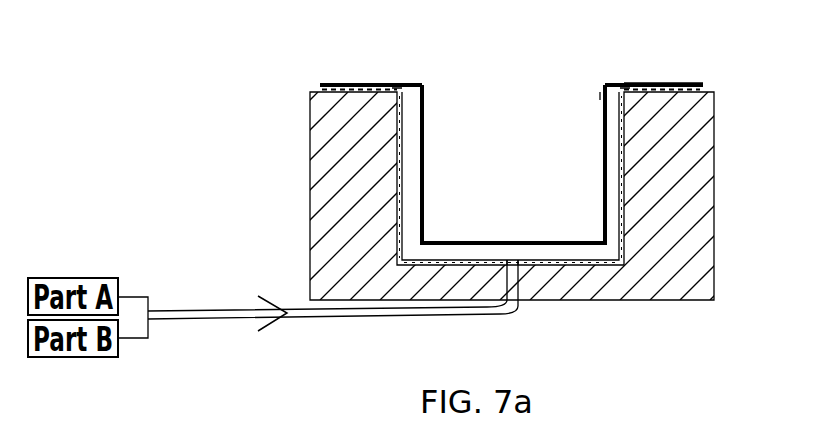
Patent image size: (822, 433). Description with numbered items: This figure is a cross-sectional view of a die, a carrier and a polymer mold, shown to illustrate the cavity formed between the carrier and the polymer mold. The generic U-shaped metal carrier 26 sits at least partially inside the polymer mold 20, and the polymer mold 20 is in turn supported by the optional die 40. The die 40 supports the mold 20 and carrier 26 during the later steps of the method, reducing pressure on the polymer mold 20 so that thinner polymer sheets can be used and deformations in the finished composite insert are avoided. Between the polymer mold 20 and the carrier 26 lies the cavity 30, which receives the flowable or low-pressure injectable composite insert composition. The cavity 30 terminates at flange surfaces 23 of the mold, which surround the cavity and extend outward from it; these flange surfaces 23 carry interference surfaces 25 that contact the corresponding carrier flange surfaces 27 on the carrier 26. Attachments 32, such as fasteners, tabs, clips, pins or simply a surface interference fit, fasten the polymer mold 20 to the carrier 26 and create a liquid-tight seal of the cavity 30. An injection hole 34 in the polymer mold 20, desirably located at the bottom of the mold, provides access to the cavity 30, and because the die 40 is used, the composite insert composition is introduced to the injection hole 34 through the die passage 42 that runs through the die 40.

The polymer mold 20 is at (623, 146).
The flange surfaces 23 is at (710, 88).
The interference surfaces 25 is at (393, 88).
The carrier 26 is at (602, 95).
The carrier flange surfaces 27 is at (322, 91).
The cavity 30 is at (406, 202).
The attachment 32 is at (350, 92).
The injection hole 34 is at (512, 262).
The die 40 is at (715, 218).
The die passage 42 is at (513, 290).